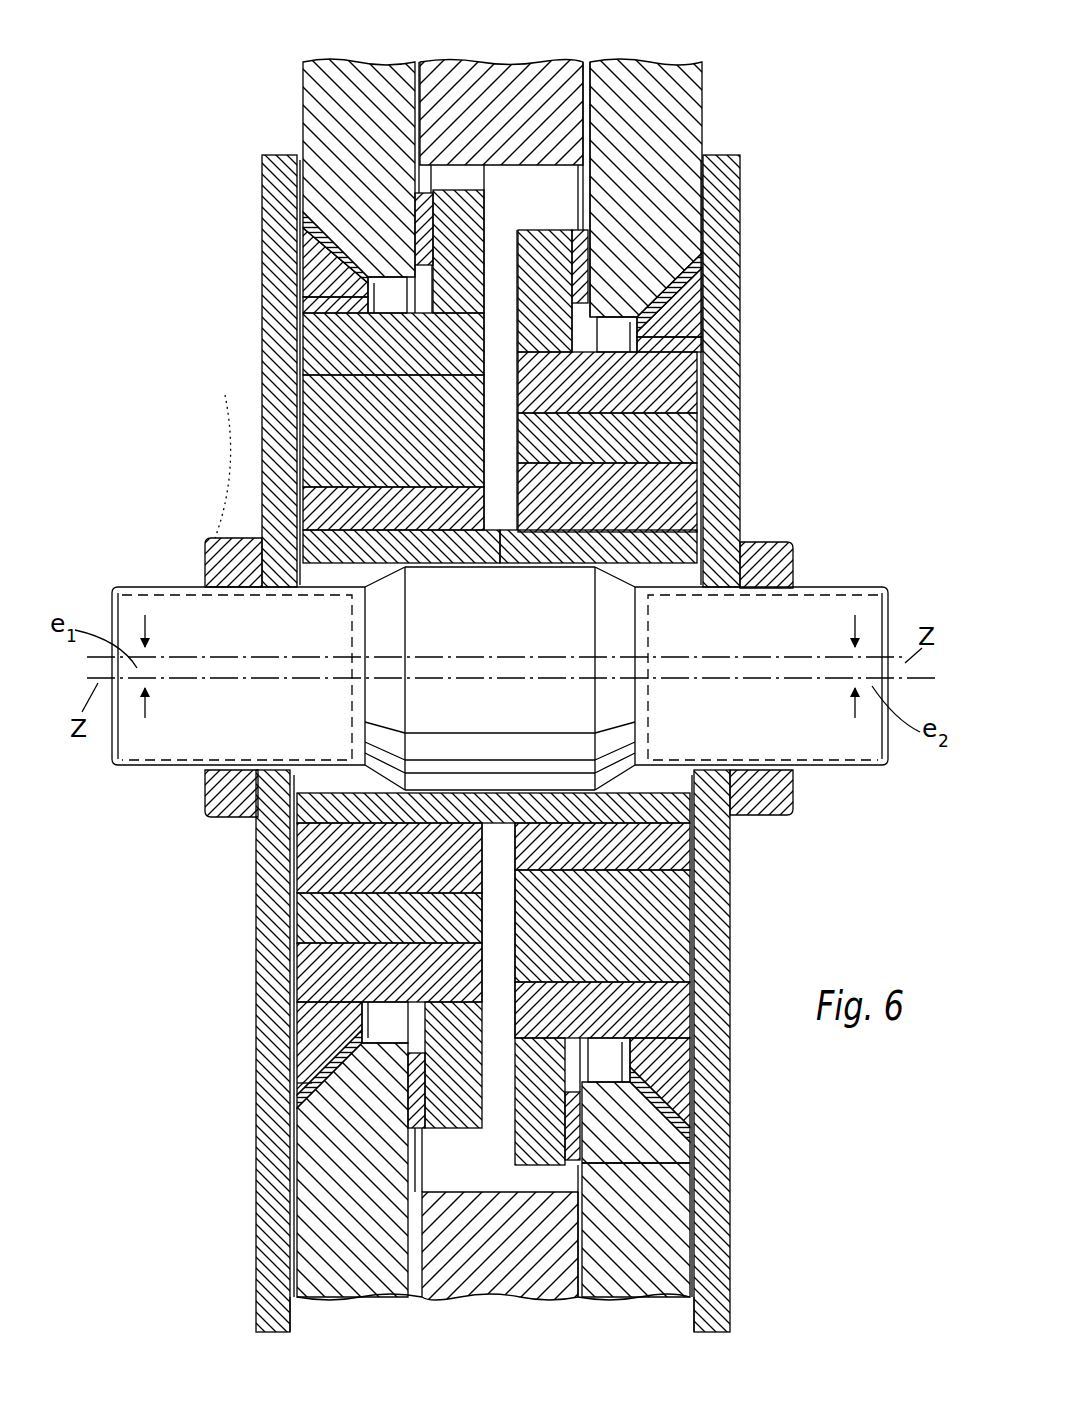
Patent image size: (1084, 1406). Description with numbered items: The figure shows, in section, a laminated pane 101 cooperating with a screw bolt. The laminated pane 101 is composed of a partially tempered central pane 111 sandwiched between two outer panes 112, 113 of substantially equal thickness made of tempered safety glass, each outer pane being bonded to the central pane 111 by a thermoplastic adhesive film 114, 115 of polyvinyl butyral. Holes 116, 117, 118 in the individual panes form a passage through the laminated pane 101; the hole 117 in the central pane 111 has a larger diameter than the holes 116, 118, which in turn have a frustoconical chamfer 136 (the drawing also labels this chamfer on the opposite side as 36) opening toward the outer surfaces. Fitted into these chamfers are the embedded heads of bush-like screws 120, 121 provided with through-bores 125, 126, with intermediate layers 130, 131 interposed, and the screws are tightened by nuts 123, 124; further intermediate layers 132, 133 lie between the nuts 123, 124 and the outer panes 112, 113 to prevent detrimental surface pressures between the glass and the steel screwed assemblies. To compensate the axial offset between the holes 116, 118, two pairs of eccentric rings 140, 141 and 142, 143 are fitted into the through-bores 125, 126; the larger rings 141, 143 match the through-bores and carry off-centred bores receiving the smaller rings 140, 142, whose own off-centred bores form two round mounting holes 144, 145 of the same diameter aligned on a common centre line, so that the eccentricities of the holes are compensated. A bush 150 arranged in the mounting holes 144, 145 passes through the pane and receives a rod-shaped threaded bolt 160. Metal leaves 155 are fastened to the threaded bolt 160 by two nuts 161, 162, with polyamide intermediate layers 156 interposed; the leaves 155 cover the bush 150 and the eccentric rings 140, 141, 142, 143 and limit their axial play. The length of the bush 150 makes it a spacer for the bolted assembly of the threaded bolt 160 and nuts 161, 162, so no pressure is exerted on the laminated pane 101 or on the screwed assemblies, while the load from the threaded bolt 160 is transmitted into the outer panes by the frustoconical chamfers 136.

The laminated pane 101 is at (268, 95).
The central pane 111 is at (513, 70).
The outer pane 112 is at (317, 123).
The outer pane 113 is at (680, 120).
The thermoplastic adhesive film 114 is at (418, 62).
The thermoplastic adhesive film 115 is at (588, 62).
The hole 116 is at (375, 297).
The hole 117 is at (513, 167).
The hole 118 is at (603, 346).
The bush-like screw 120 is at (317, 976).
The bush-like screw 121 is at (675, 1018).
The nut 123 is at (456, 1125).
The nut 124 is at (523, 1162).
The through-bore 125 is at (340, 388).
The through-bore 126 is at (660, 420).
The intermediate layer 130 is at (363, 1043).
The intermediate layer 131 is at (667, 1075).
The intermediate layer 132 is at (345, 1108).
The intermediate layer 133 is at (585, 1163).
The frustoconical chamfer 136 is at (340, 247).
The right wedge seal 36 is at (665, 288).
The eccentric ring 140 is at (323, 427).
The eccentric ring 141 is at (323, 498).
The eccentric ring 142 is at (685, 447).
The eccentric ring 143 is at (670, 508).
The mounting hole 144 is at (336, 562).
The mounting hole 145 is at (655, 562).
The bush 150 is at (500, 565).
The metal leaf 155 is at (275, 1292).
The polyamide intermediate layer 156 is at (293, 1312).
The threaded bolt 160 is at (548, 700).
The nut 161 is at (222, 820).
The nut 162 is at (770, 820).